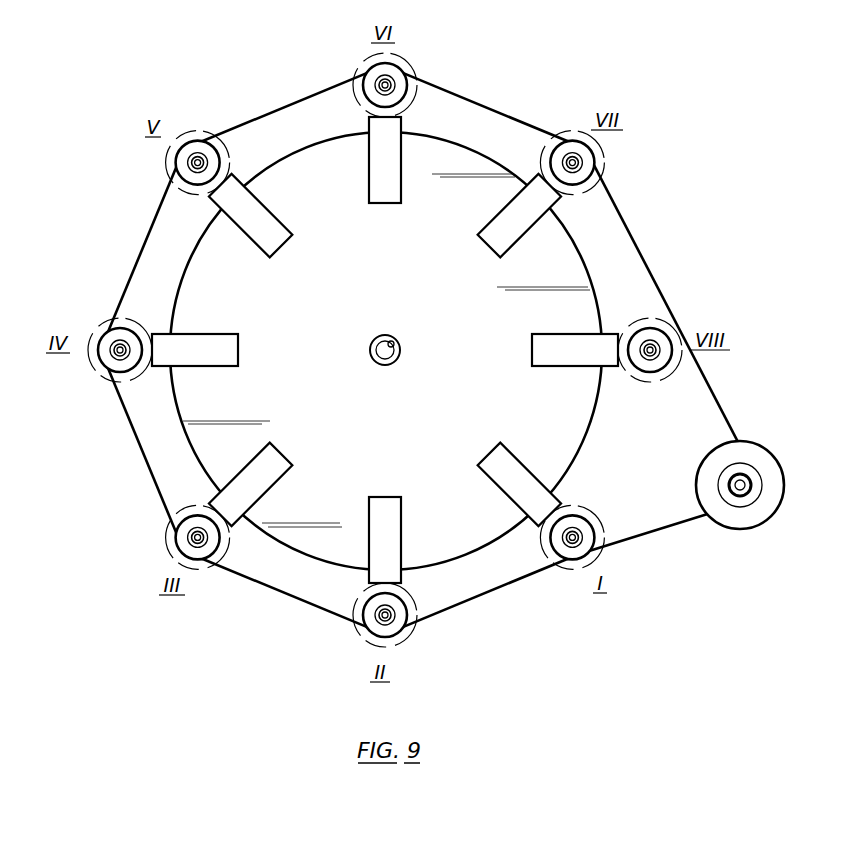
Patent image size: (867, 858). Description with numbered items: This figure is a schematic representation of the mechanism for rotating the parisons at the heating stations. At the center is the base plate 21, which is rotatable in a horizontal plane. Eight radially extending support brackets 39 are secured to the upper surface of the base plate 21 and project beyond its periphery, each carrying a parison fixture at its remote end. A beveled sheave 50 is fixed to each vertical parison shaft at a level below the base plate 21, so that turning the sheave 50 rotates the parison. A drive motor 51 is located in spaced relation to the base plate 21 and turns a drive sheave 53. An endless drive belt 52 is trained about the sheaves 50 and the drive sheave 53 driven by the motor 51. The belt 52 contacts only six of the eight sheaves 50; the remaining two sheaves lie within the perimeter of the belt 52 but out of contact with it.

The base plate 21 is at (442, 392).
The support bracket 39 is at (385, 204).
The beveled sheave 50 is at (377, 72).
The drive motor 51 is at (772, 487).
The endless drive belt 52 is at (642, 254).
The drive sheave 53 is at (752, 497).